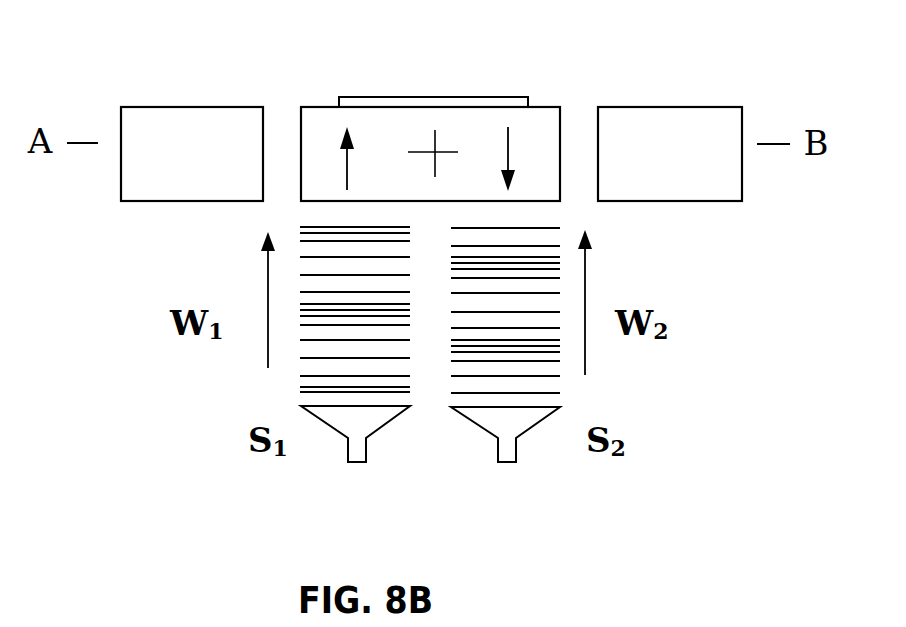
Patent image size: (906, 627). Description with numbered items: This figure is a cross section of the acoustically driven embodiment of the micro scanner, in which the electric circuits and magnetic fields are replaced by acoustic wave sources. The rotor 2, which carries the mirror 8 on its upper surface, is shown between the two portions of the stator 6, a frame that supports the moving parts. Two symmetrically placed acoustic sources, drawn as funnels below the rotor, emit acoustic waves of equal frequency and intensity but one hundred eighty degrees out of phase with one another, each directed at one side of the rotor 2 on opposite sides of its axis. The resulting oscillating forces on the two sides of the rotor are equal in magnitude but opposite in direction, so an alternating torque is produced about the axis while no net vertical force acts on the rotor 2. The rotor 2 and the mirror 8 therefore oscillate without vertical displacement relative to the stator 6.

The rotor 2 is at (302, 98).
The stator 6 is at (152, 103).
The mirror 8 is at (412, 91).